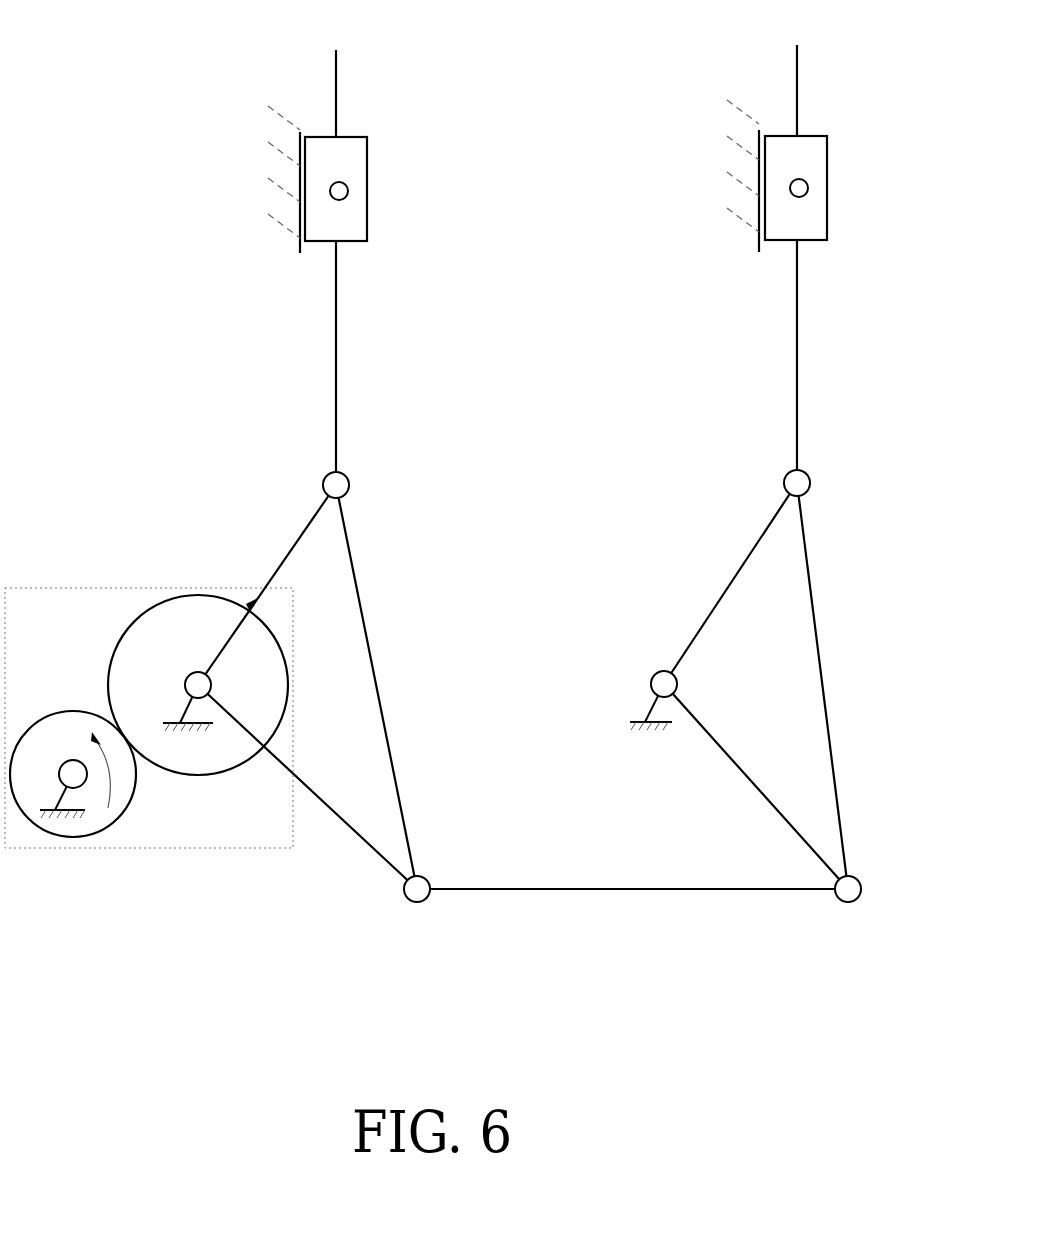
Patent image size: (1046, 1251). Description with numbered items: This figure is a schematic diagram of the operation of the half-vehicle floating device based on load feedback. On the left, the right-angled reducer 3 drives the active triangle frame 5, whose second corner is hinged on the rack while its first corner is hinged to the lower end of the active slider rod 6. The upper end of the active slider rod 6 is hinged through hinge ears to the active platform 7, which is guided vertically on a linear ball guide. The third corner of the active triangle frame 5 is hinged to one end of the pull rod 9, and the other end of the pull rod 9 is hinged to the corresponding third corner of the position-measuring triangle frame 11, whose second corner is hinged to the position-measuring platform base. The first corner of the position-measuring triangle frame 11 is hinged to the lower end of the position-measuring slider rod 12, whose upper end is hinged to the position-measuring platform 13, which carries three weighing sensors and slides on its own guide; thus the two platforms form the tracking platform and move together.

The right-angled reducer 3 is at (230, 595).
The active triangle frame 5 is at (297, 530).
The active slider rod 6 is at (335, 327).
The active platform 7 is at (320, 162).
The pull rod 9 is at (632, 888).
The position-measuring triangle frame 11 is at (815, 612).
The position-measuring slider rod 12 is at (798, 400).
The position-measuring platform 13 is at (807, 222).